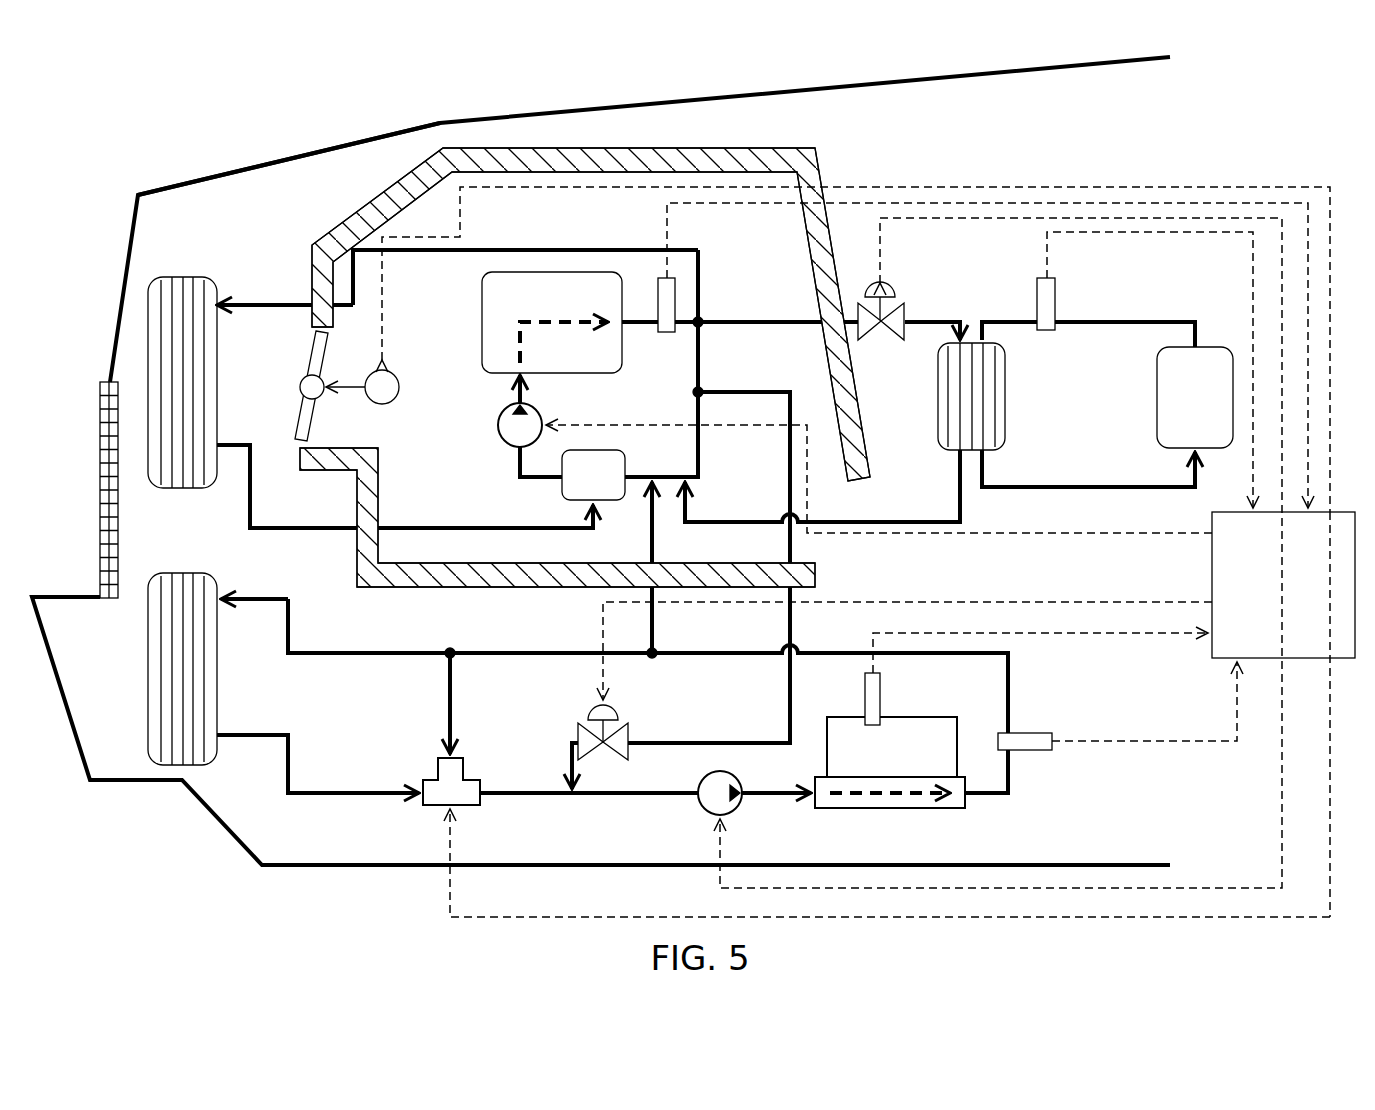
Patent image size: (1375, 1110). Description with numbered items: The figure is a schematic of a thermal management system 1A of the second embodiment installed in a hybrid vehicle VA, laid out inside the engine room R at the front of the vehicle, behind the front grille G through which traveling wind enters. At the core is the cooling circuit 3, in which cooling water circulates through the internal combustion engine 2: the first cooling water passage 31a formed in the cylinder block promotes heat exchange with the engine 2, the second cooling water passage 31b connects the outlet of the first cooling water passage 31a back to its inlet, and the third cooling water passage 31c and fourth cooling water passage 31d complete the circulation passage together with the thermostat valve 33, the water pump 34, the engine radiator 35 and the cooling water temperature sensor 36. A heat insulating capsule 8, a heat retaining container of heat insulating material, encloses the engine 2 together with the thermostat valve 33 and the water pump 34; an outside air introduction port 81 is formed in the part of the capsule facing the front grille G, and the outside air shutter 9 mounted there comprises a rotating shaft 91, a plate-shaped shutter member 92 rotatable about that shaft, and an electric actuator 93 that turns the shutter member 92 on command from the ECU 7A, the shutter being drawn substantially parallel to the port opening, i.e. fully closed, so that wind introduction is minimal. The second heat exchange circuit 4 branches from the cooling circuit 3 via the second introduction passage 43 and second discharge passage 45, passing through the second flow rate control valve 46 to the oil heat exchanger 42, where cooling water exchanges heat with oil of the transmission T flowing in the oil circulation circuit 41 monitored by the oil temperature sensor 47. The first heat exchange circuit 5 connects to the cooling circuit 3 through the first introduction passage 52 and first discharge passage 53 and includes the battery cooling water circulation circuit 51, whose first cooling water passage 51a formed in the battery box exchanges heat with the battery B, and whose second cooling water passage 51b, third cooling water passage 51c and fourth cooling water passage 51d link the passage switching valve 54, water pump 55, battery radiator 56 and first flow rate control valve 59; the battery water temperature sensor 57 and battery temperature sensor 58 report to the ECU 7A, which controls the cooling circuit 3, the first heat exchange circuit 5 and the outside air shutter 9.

The engine room R is at (1097, 140).
The vehicle VA is at (183, 137).
The front grille G is at (110, 403).
The engine radiator 35 is at (190, 277).
The battery radiator 56 is at (216, 673).
The third cooling water passage 31c is at (441, 252).
The cooling circuit 3 is at (716, 288).
The second cooling water passage 31b is at (700, 470).
The second introduction passage 43 is at (723, 322).
The first introduction passage 52 is at (790, 690).
The water pump 34 is at (498, 426).
The internal combustion engine 2 is at (588, 374).
The first cooling water passage 31a is at (484, 346).
The cooling water temperature sensor 36 is at (666, 332).
The thermostat valve 33 is at (615, 500).
The fourth cooling water passage 31d is at (452, 528).
The first discharge passage 53 is at (653, 545).
The second discharge passage 45 is at (912, 522).
The second heat exchange circuit 4 is at (928, 295).
The oil circulation circuit 41 is at (1103, 325).
The thermal management system 1A is at (1163, 291).
The second flow rate control valve 46 is at (891, 341).
The oil temperature sensor 47 is at (1045, 331).
The oil heat exchanger 42 is at (1005, 430).
The transmission T is at (1158, 424).
The heat insulating capsule 8 is at (815, 160).
The outside air introduction port 81 is at (313, 447).
The outside air shutter 9 is at (289, 358).
The shutter member 92 is at (298, 435).
The rotating shaft 91 is at (300, 388).
The electric actuator 93 is at (378, 370).
The third cooling water passage 51c is at (525, 653).
The fourth cooling water passage 51d is at (413, 789).
The battery cooling water circulation circuit 51 is at (345, 806).
The passage switching valve 54 is at (471, 778).
The second cooling water passage 51b is at (536, 796).
The first flow rate control valve 59 is at (585, 717).
The water pump 55 is at (714, 814).
The first heat exchange circuit 5 is at (1030, 784).
The first cooling water passage 51a is at (917, 808).
The battery B is at (912, 724).
The battery temperature sensor 58 is at (865, 704).
The battery water temperature sensor 57 is at (1028, 733).
The ECU 7A is at (1225, 660).